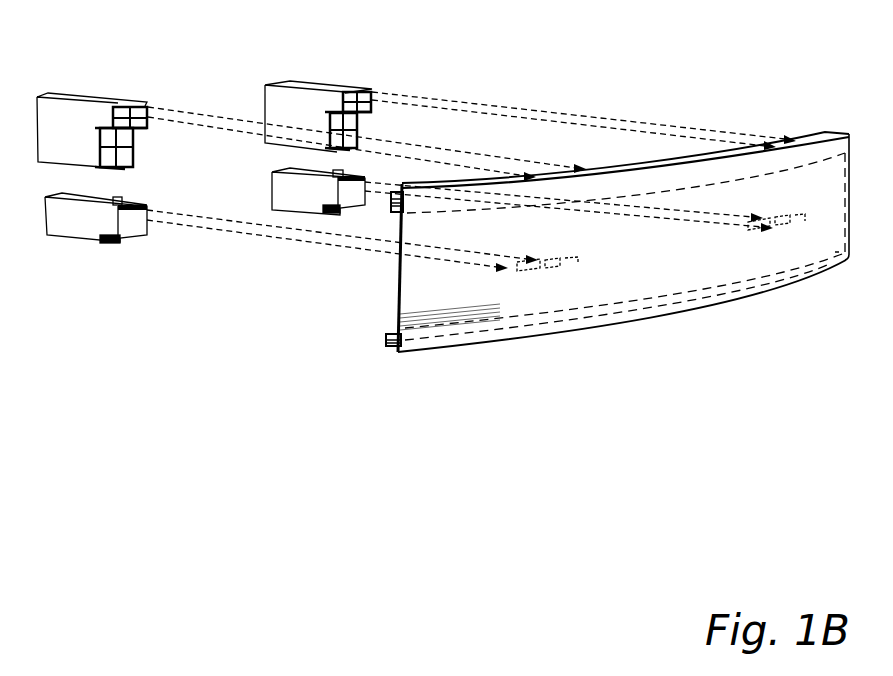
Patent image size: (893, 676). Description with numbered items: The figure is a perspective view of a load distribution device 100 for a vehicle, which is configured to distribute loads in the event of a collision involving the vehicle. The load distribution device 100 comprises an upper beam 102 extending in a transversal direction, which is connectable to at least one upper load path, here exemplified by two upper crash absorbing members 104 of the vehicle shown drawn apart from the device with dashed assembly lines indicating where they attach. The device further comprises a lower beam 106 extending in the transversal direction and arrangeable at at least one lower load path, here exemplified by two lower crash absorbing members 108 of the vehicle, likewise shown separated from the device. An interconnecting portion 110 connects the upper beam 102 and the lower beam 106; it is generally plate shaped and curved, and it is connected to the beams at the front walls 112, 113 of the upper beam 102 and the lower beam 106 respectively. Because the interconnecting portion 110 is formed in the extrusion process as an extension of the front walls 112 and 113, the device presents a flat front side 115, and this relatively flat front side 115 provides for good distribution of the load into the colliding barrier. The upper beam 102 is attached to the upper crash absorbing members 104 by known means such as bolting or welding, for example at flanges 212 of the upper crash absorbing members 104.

The load distribution device 100 is at (730, 332).
The upper beam 102 is at (393, 190).
The upper crash absorbing member 104 is at (60, 117).
The lower beam 106 is at (388, 336).
The lower crash absorbing member 108 is at (92, 227).
The interconnecting portion 110 is at (805, 193).
The front wall of the upper beam 112 is at (380, 212).
The front wall of the lower beam 113 is at (382, 347).
The flat front side 115 is at (437, 293).
The flange 212 is at (102, 120).